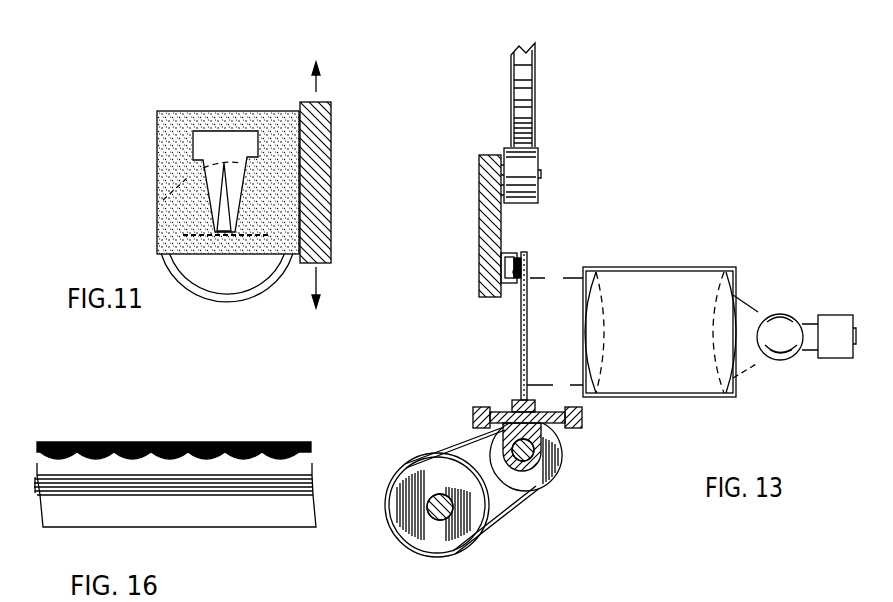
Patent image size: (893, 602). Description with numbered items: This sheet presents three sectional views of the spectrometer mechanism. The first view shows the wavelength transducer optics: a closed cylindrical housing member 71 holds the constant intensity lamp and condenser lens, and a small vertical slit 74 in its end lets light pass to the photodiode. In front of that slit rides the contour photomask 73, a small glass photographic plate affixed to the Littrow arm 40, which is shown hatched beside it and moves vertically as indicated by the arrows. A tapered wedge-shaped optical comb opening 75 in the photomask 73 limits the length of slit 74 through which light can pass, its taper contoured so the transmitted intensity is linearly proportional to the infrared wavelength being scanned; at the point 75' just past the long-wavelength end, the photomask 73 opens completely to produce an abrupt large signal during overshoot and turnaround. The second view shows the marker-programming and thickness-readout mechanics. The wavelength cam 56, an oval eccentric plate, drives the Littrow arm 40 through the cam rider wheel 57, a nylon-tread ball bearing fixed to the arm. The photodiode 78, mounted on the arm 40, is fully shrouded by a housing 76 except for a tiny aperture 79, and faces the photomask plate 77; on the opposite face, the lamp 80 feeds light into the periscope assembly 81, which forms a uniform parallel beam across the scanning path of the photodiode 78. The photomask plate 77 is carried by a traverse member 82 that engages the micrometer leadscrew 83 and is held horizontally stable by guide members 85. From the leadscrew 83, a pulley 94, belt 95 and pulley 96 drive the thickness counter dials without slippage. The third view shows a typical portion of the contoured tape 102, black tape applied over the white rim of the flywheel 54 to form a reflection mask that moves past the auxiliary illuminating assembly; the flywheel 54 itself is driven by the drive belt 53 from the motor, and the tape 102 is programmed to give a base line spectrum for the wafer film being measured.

In FIG. 11, the contour photomask 73 is at (158, 123).
In FIG. 11, the fully open point of contour photomask 75' is at (176, 153).
In FIG. 11, the optical comb opening 75 is at (171, 197).
In FIG. 11, the slit 74 is at (193, 233).
In FIG. 11, the Littrow arm 40 is at (332, 157).
In FIG. 13, the Littrow arm 40 is at (479, 216).
In FIG. 11, the cylindrical housing member 71 is at (260, 297).
In FIG. 13, the wavelength cam 56 is at (536, 96).
In FIG. 13, the cam rider wheel 57 is at (538, 148).
In FIG. 13, the housing 76 is at (510, 290).
In FIG. 13, the photodiode 78 is at (507, 257).
In FIG. 13, the aperture 79 is at (516, 272).
In FIG. 13, the photomask plate 77 is at (521, 345).
In FIG. 13, the periscope assembly 81 is at (659, 267).
In FIG. 13, the lamp 80 is at (833, 315).
In FIG. 13, the traverse member 82 is at (512, 410).
In FIG. 13, the guide members 85 is at (583, 421).
In FIG. 13, the micrometer leadscrew 83 is at (534, 452).
In FIG. 13, the pulley 94 is at (540, 468).
In FIG. 13, the belt 95 is at (508, 515).
In FIG. 13, the pulley 96 is at (463, 540).
In FIG. 16, the contoured tape 102 is at (227, 442).
In FIG. 16, the drive belt 53 is at (307, 487).
In FIG. 16, the flywheel 54 is at (297, 530).